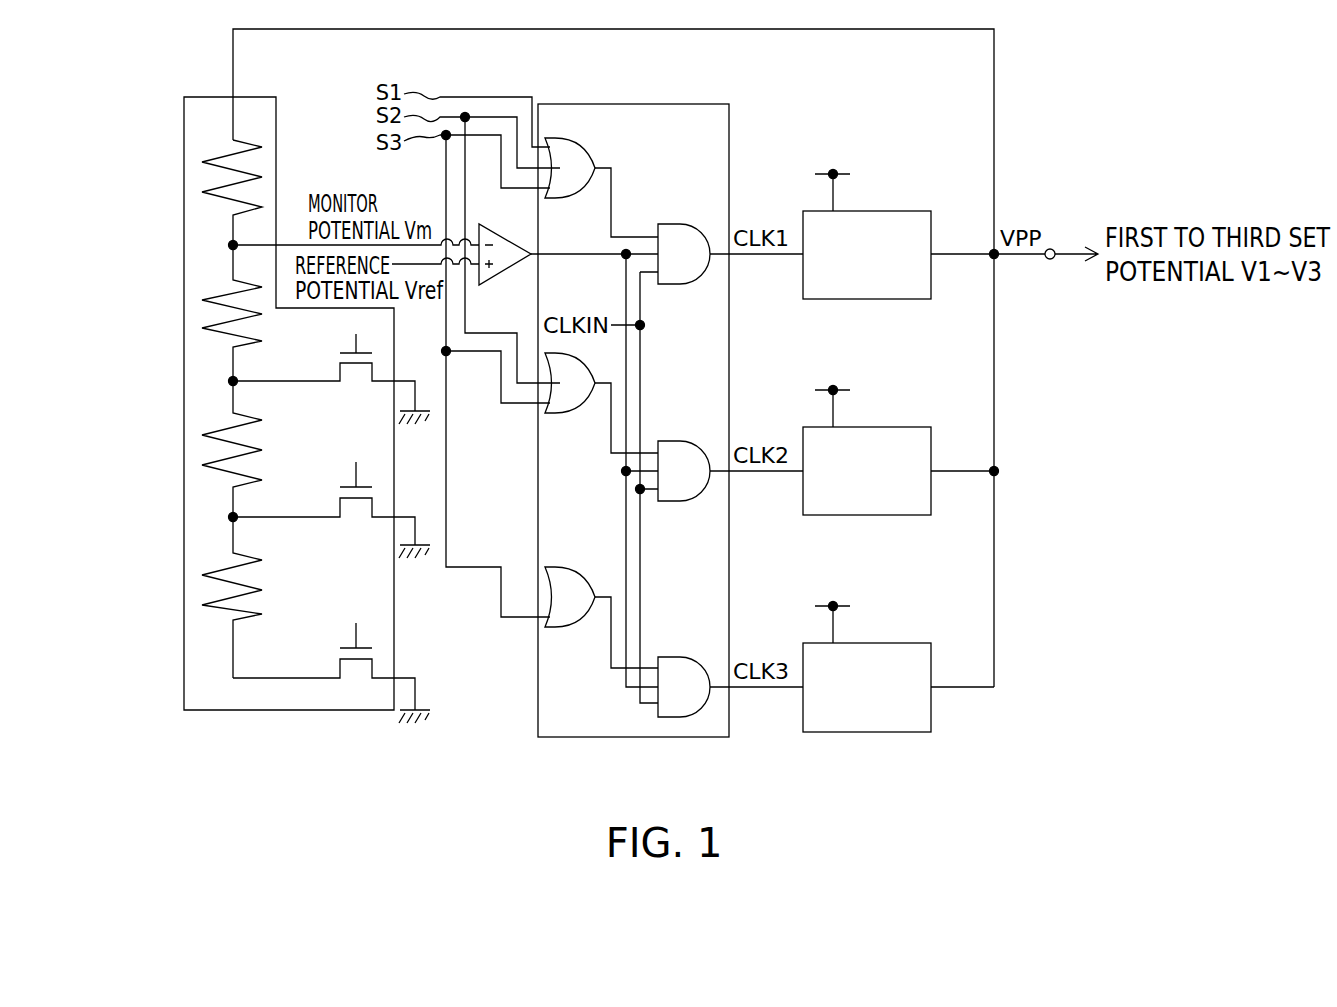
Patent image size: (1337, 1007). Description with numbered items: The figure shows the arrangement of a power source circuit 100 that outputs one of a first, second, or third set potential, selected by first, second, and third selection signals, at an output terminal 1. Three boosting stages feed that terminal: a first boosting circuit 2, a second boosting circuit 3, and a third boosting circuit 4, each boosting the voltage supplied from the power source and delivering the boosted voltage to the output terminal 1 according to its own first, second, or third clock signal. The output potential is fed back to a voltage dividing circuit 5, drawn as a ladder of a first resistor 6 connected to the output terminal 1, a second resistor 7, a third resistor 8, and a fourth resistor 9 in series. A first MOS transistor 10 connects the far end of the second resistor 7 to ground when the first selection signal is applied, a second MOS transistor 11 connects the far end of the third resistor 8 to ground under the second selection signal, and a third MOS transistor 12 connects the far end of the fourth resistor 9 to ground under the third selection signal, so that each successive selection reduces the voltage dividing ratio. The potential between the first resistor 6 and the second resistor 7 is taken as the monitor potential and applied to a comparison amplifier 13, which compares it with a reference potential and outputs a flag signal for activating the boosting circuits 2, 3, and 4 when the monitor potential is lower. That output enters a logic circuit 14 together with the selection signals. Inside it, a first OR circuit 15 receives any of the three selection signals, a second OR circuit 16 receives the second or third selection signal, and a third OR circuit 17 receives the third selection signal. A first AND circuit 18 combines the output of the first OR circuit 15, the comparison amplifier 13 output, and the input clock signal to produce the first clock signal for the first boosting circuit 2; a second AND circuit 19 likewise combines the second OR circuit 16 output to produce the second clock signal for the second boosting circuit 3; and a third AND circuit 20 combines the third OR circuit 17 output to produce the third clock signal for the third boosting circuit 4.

The output terminal 1 is at (1052, 246).
The first boosting circuit 2 is at (897, 211).
The second boosting circuit 3 is at (897, 427).
The third boosting circuit 4 is at (897, 643).
The voltage dividing circuit 5 is at (184, 225).
The first resistor 6 is at (205, 168).
The second resistor 7 is at (205, 295).
The third resistor 8 is at (205, 421).
The fourth resistor 9 is at (205, 548).
The first MOS transistor 10 is at (330, 367).
The second MOS transistor 11 is at (330, 505).
The third MOS transistor 12 is at (340, 667).
The comparison amplifier 13 is at (501, 277).
The logic circuit 14 is at (662, 104).
The first OR circuit 15 is at (570, 138).
The second OR circuit 16 is at (574, 413).
The third OR circuit 17 is at (576, 627).
The first AND circuit 18 is at (687, 224).
The second AND circuit 19 is at (687, 441).
The third AND circuit 20 is at (687, 657).
The power source circuit 100 is at (632, 789).